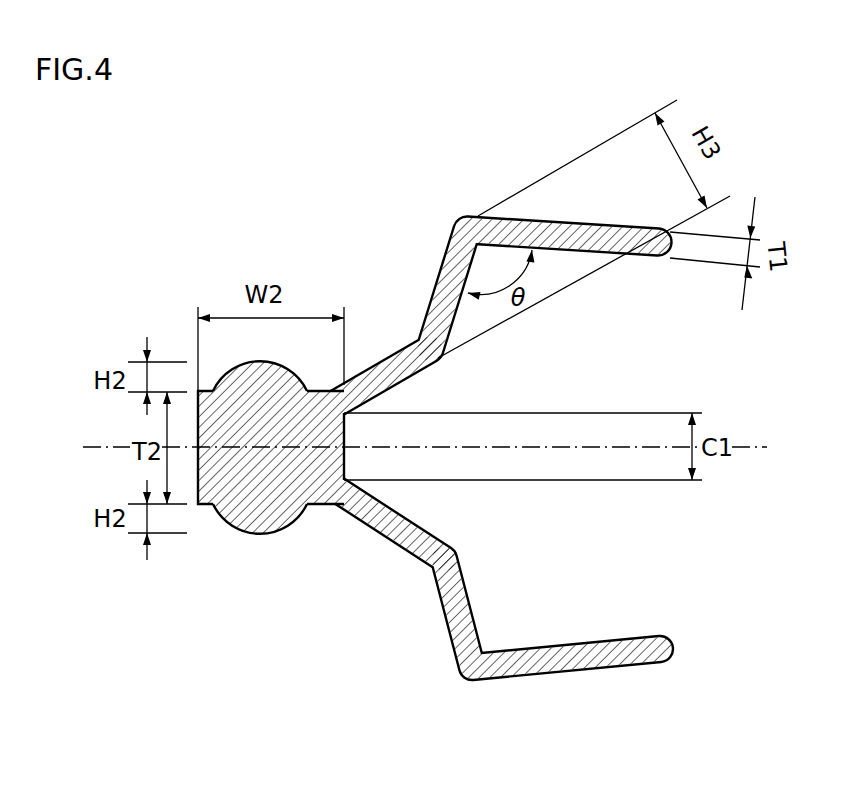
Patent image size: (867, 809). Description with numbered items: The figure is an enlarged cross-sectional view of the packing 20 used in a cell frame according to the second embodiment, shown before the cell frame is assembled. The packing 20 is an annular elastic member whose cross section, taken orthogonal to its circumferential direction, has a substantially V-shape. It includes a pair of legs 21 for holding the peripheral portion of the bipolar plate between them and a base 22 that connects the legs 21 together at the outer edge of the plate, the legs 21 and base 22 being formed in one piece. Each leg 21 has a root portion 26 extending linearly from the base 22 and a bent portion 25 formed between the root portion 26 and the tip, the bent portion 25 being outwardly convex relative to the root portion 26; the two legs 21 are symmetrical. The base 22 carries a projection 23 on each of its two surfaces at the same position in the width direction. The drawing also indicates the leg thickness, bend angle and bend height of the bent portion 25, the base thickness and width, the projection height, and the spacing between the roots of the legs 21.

The packing 20 is at (378, 449).
The leg 21 is at (495, 449).
The base 22 is at (198, 504).
The projection 23 is at (230, 522).
The bent portion 25 is at (448, 247).
The root portion 26 is at (378, 360).